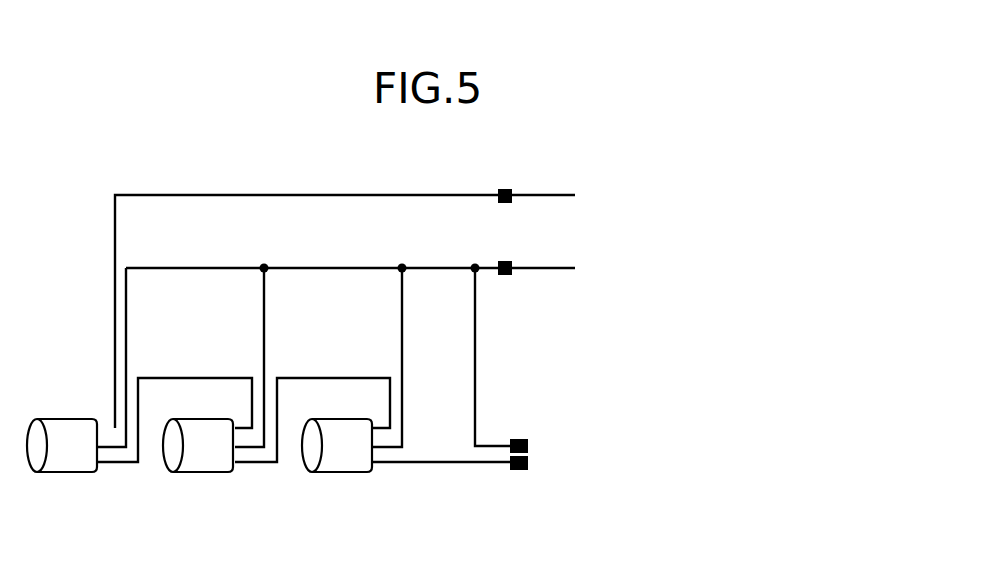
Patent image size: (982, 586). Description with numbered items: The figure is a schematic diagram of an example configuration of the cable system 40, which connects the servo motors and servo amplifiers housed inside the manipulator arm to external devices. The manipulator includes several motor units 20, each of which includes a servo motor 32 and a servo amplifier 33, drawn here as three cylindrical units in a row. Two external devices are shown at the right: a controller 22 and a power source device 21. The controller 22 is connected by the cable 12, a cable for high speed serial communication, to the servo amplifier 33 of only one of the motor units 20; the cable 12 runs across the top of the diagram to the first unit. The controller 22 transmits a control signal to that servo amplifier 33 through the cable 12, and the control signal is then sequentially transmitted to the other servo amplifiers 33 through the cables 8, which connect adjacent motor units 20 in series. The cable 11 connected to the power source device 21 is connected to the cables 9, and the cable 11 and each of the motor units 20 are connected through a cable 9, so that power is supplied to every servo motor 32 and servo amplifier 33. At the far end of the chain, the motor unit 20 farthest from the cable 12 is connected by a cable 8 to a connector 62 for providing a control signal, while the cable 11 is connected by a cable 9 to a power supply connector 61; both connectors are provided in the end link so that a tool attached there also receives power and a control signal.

The cable 8 is at (202, 378).
The cable 9 is at (126, 308).
The cable 11 is at (345, 266).
The cable 12 is at (115, 237).
The motor unit 20 is at (60, 419).
The power source device 21 is at (677, 278).
The controller 22 is at (615, 209).
The servo motor 32 is at (207, 473).
The servo amplifier 33 is at (342, 459).
The cable system 40 is at (582, 363).
The power supply connector 61 is at (518, 438).
The connector 62 is at (518, 472).